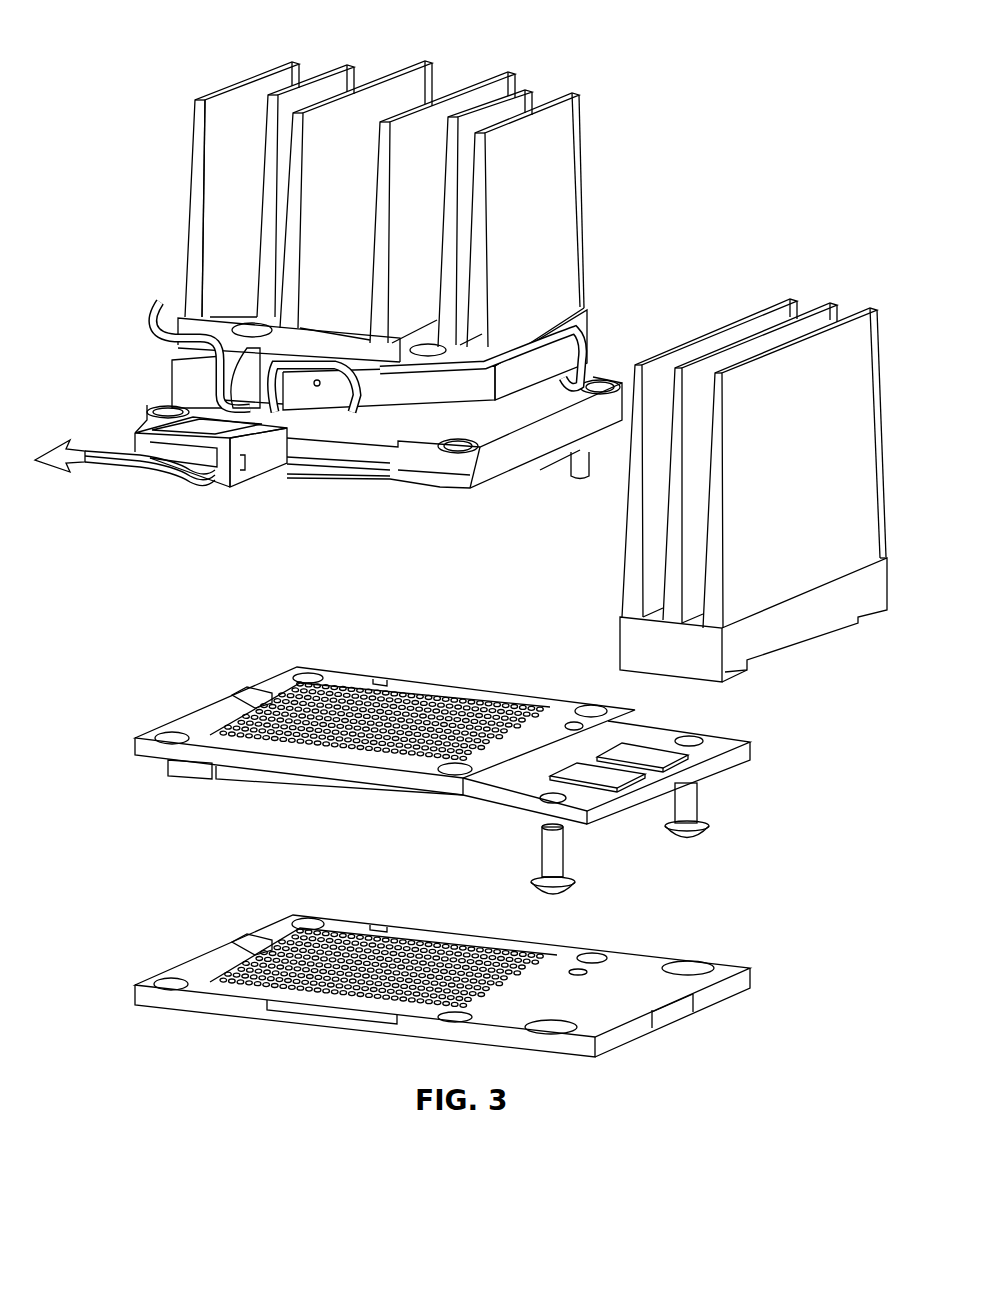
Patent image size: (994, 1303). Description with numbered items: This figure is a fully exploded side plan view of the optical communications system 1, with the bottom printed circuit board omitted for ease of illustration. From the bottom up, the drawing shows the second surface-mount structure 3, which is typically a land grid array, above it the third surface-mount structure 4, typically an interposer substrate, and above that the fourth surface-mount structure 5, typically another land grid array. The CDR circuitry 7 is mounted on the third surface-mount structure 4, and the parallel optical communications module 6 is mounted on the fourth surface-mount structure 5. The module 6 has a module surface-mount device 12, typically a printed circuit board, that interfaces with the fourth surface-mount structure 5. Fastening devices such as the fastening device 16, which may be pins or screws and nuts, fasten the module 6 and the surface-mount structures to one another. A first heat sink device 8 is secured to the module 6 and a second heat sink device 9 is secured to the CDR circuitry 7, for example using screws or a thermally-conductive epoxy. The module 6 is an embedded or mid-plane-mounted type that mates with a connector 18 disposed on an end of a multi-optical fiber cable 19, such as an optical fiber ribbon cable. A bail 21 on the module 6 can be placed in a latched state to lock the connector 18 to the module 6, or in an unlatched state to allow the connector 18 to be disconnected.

The optical communications system 1 is at (281, 27).
The second surface-mount structure 3 is at (633, 977).
The third surface-mount structure 4 is at (727, 742).
The fourth surface-mount structure 5 is at (548, 707).
The parallel optical communications module 6 is at (597, 380).
The CDR circuitry 7 is at (587, 773).
The first heat sink device 8 is at (513, 86).
The second heat sink device 9 is at (820, 302).
The module surface-mount device 12 is at (373, 478).
The fastening device 16 is at (558, 853).
The connector 18 is at (263, 467).
The multi-optical fiber cable 19 is at (93, 447).
The bail 21 is at (170, 323).